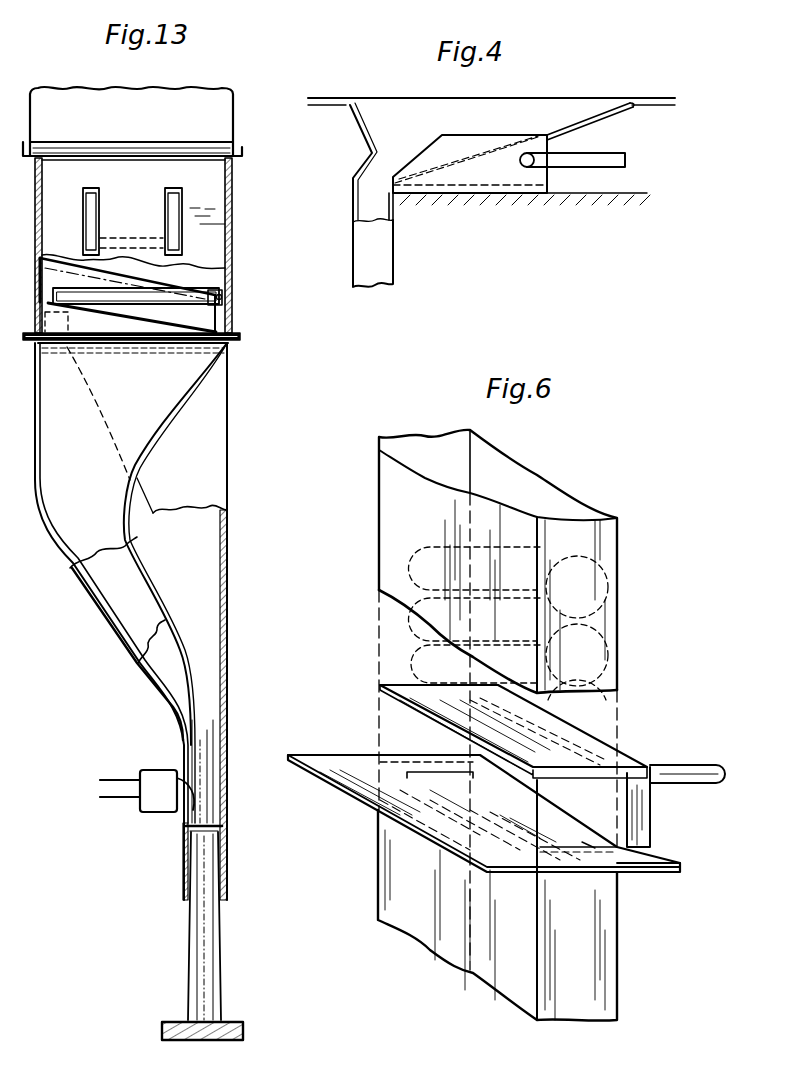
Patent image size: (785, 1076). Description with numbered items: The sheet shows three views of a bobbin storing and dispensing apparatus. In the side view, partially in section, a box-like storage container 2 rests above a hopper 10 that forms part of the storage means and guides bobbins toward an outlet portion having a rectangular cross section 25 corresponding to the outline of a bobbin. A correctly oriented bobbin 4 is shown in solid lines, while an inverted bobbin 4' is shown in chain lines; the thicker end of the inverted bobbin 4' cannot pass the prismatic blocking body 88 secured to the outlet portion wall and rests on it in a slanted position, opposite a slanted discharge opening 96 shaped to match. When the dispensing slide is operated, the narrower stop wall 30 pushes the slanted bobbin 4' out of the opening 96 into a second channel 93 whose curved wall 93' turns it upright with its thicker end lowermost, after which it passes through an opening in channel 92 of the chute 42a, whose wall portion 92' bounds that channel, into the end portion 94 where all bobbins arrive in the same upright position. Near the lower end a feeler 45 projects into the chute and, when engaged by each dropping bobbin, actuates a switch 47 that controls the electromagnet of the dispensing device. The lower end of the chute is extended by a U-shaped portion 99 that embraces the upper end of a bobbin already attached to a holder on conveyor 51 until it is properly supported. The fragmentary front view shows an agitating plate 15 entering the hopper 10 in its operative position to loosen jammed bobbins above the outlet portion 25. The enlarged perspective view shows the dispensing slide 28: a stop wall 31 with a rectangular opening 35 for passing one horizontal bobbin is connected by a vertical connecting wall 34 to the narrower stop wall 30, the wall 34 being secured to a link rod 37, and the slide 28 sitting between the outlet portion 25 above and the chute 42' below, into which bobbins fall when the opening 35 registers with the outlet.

In FIG. 13, the storage container 2 is at (227, 113).
In FIG. 13, the hopper 10 is at (217, 190).
In FIG. 4, the hopper 10 is at (370, 120).
In FIG. 13, the inverted bobbin 4' is at (127, 271).
In FIG. 13, the rectangular cross section 25 is at (222, 279).
In FIG. 4, the rectangular cross section 25 is at (383, 250).
In FIG. 6, the rectangular cross section 25 is at (612, 548).
In FIG. 13, the bobbin 4 is at (153, 325).
In FIG. 13, the slanted discharge opening 96 is at (222, 300).
In FIG. 13, the stop wall 30 is at (190, 298).
In FIG. 6, the stop wall 30 is at (627, 753).
In FIG. 13, the blocking body 88 is at (85, 360).
In FIG. 13, the second channel 93 is at (111, 621).
In FIG. 13, the curved wall 93' is at (173, 583).
In FIG. 13, the inner wall portion 92' is at (169, 475).
In FIG. 13, the channel 92 is at (219, 621).
In FIG. 13, the chute 42a is at (248, 644).
In FIG. 13, the end portion of the chute 94 is at (213, 773).
In FIG. 13, the feeler 45 is at (192, 806).
In FIG. 13, the switch 47 is at (148, 800).
In FIG. 13, the U-shaped portion 99 is at (227, 863).
In FIG. 13, the conveyor 51 is at (235, 1022).
In FIG. 4, the agitating plate 15 is at (535, 148).
In FIG. 6, the dispensing slide 28 is at (340, 755).
In FIG. 6, the connecting wall 34 is at (642, 815).
In FIG. 6, the link rod 37 is at (693, 767).
In FIG. 6, the stop wall 31 is at (657, 858).
In FIG. 6, the rectangular opening 35 is at (582, 842).
In FIG. 6, the chute 42' is at (524, 900).